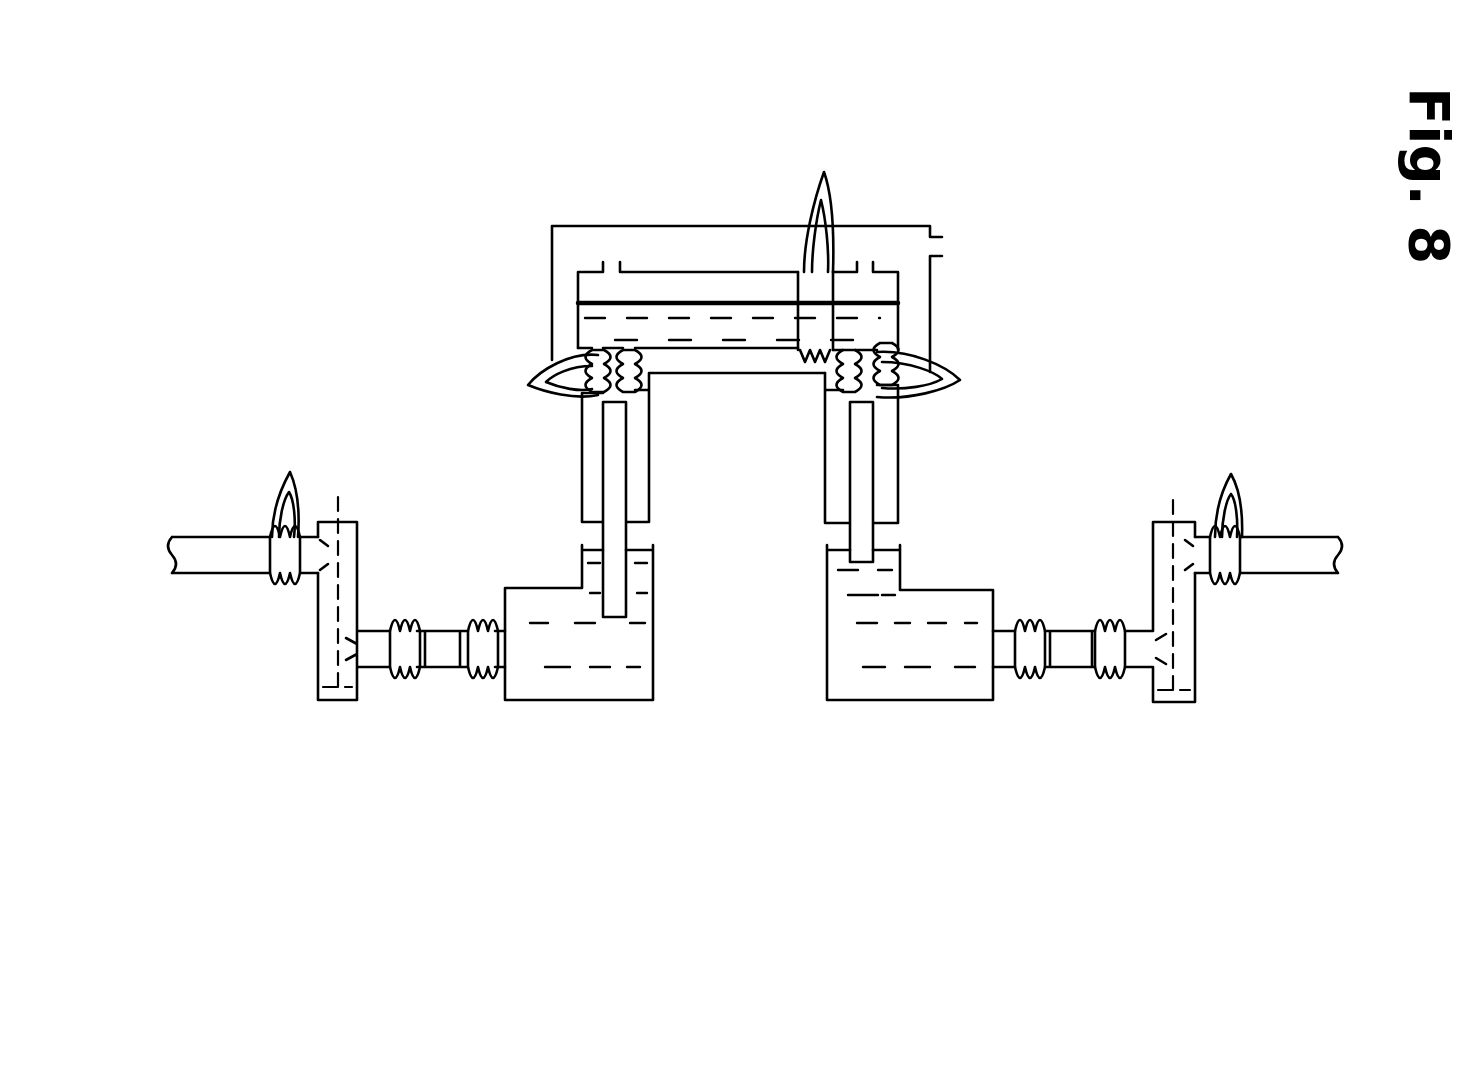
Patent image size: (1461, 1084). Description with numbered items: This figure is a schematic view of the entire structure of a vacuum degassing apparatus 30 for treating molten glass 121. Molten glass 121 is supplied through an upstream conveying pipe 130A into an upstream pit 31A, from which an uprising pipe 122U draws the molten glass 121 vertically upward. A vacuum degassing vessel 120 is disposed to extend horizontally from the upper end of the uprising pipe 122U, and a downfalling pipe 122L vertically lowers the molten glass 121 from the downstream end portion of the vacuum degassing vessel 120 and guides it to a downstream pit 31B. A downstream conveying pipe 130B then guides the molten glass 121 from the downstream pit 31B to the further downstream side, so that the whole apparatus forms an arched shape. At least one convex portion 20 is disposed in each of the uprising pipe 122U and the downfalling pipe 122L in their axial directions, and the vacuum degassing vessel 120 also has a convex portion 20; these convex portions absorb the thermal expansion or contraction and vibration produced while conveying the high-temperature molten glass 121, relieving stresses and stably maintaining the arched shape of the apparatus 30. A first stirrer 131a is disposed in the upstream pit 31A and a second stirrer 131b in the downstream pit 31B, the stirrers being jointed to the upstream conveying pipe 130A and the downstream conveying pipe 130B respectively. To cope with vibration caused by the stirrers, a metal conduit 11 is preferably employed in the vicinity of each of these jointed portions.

The vacuum degassing apparatus 30 is at (961, 204).
The vacuum degassing vessel 120 is at (761, 221).
The molten glass 121 is at (578, 323).
The uprising pipe 122U is at (605, 463).
The downfalling pipe 122L is at (871, 435).
The upstream pit 31A is at (540, 688).
The downstream pit 31B is at (887, 682).
The upstream conveying pipe 130A is at (218, 543).
The downstream conveying pipe 130B is at (1285, 540).
The first stirrer 131a is at (326, 511).
The second stirrer 131b is at (1163, 508).
The metal conduit 11 is at (834, 261).
The convex portion 20 is at (824, 173).